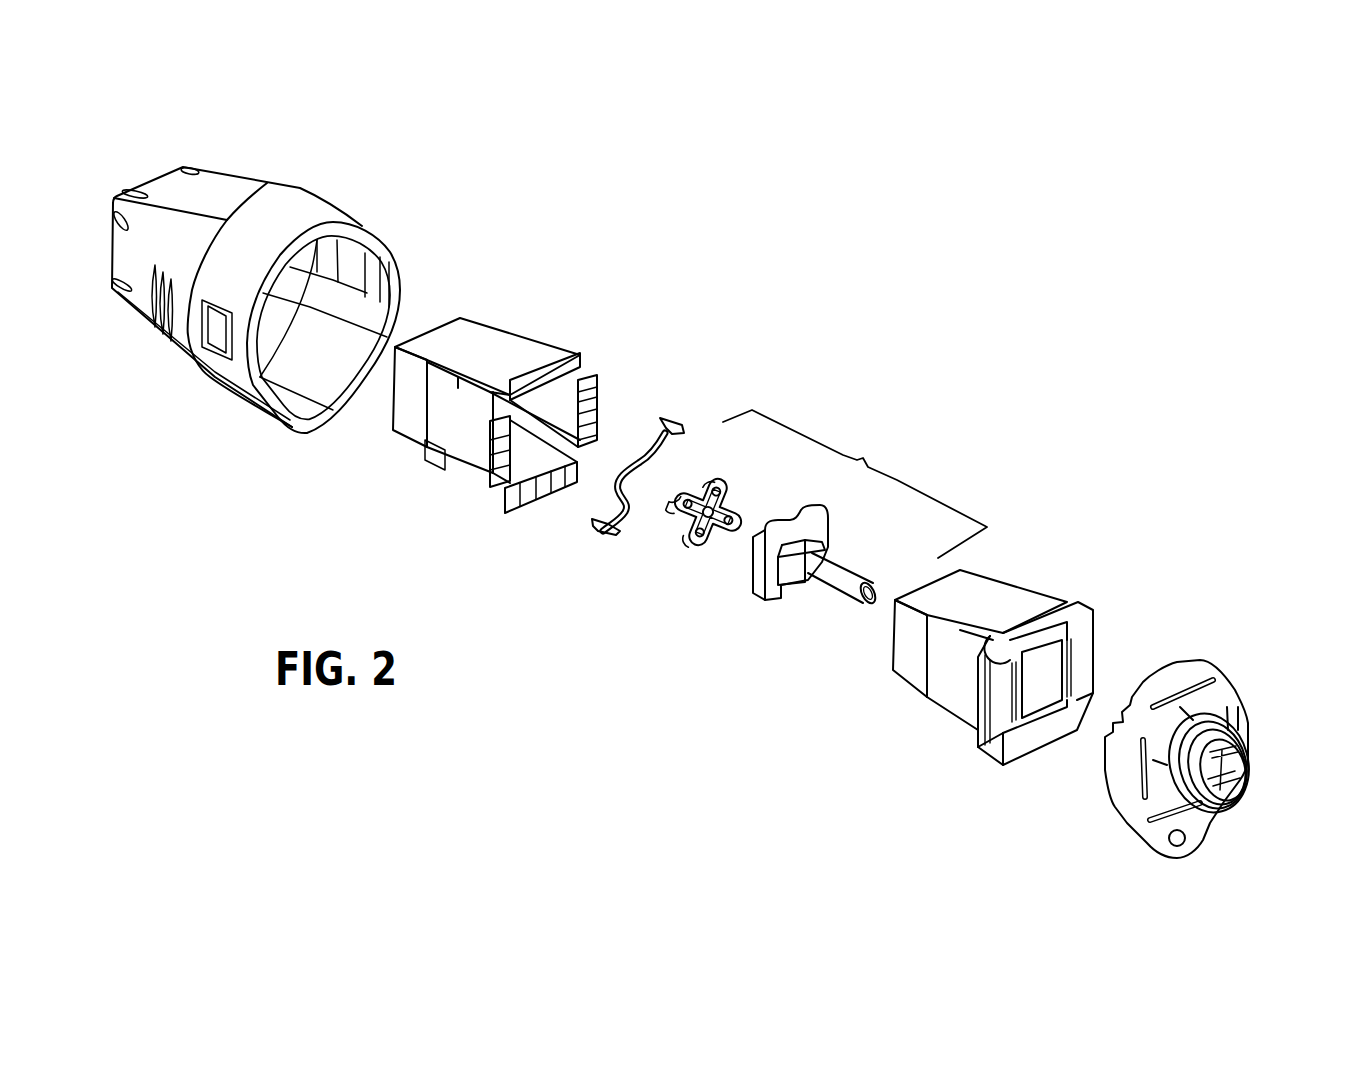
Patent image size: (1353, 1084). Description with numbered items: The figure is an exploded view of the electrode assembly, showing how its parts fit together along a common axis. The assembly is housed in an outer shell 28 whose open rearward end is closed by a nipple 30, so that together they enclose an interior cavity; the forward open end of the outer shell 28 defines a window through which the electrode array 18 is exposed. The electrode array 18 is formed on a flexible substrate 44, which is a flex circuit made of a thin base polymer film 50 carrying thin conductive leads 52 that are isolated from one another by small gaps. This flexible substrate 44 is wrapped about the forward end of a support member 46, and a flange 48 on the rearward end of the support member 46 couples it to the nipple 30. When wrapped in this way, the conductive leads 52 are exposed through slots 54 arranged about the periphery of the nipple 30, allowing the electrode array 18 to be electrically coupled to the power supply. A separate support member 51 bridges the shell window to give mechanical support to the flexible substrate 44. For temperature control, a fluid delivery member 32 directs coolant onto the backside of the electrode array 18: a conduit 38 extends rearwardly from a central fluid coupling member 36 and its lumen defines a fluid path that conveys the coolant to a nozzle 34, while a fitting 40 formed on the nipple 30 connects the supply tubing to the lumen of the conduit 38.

The electrode array 18 is at (886, 277).
The outer shell 28 is at (305, 207).
The nipple 30 is at (1207, 658).
The fluid delivery member 32 is at (855, 484).
The nozzle 34 is at (707, 478).
The central fluid coupling member 36 is at (753, 577).
The conduit 38 is at (827, 580).
The fitting 40 is at (1247, 737).
The flexible substrate 44 is at (486, 364).
The support member 46 is at (1003, 590).
The flange 48 is at (1067, 600).
The base polymer film 50 is at (467, 328).
The support member 51 is at (603, 533).
The conductive leads 52 is at (593, 403).
The slots 54 is at (1203, 687).